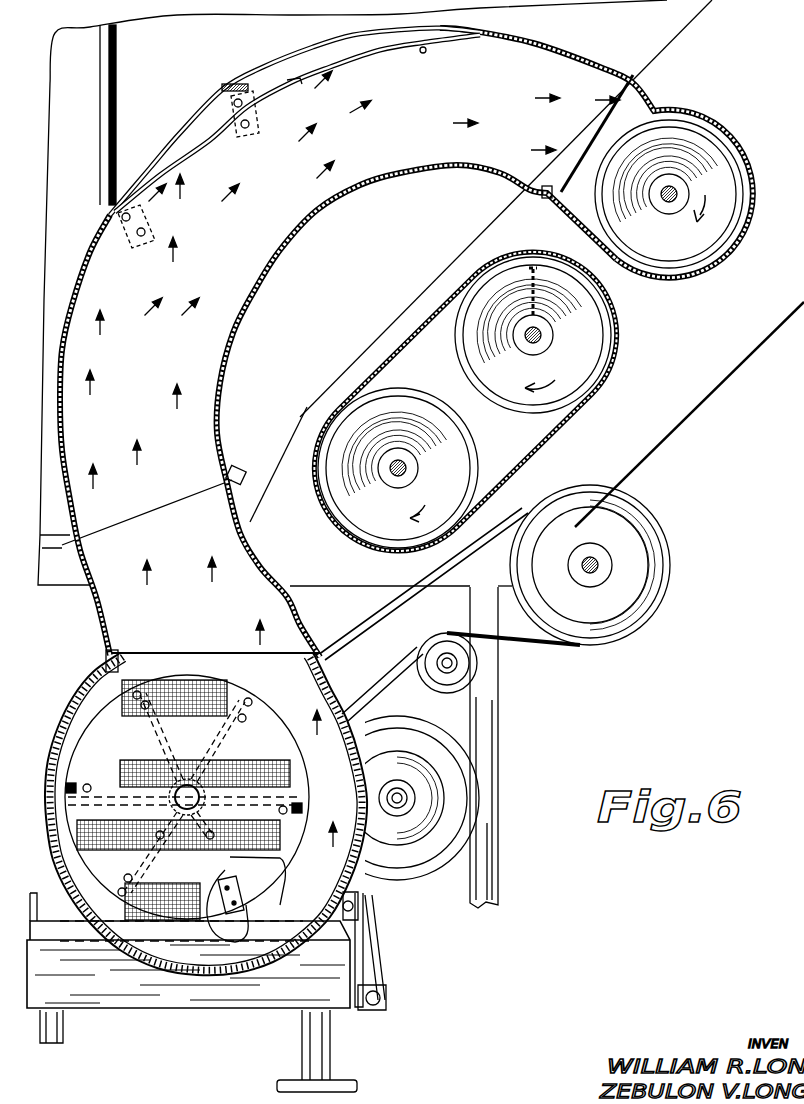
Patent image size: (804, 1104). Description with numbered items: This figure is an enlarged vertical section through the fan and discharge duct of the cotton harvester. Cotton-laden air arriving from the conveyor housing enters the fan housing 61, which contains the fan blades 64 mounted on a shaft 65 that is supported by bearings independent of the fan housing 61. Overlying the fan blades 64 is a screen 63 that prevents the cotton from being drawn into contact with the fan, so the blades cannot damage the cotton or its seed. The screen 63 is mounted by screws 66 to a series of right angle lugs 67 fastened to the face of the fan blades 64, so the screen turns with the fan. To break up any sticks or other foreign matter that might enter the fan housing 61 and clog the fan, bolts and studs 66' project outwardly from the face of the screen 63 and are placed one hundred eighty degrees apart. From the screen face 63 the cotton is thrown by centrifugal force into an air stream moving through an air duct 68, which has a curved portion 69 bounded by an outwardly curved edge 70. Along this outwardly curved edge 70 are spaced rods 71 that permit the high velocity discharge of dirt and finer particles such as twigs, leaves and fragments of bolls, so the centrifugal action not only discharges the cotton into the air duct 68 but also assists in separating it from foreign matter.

The fan housing 61 is at (268, 948).
The screen 63 is at (282, 888).
The fan blades 64 is at (214, 876).
The shaft 65 is at (182, 793).
The screws 66 is at (178, 800).
The bolts and studs 66' is at (212, 785).
The right angle lugs 67 is at (238, 942).
The air duct 68 is at (146, 424).
The curved portion 69 is at (247, 268).
The outwardly curved edge 70 is at (100, 255).
The spaced rods 71 is at (353, 63).